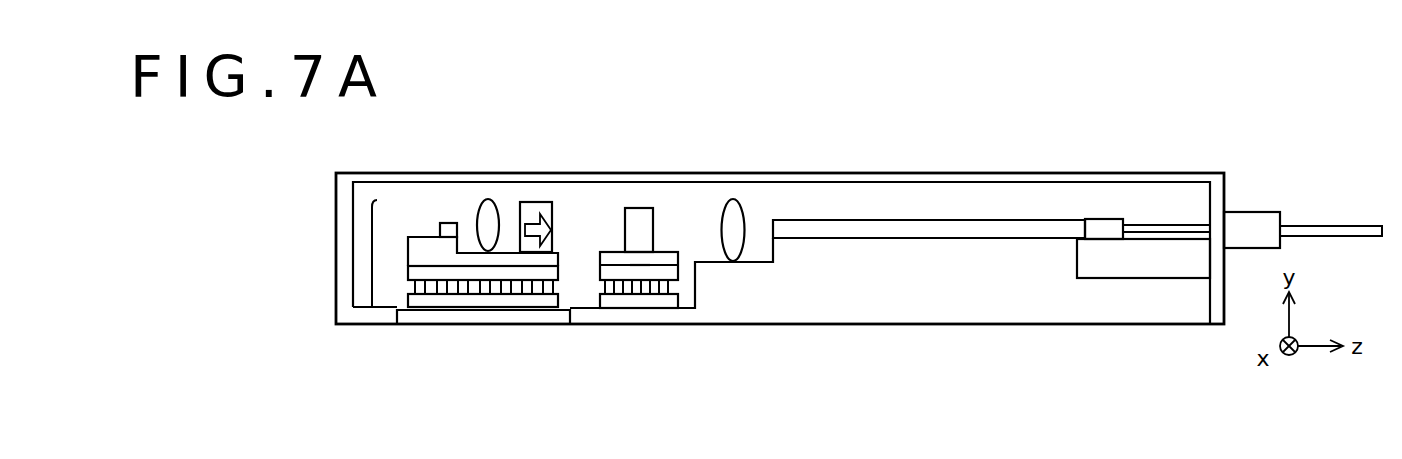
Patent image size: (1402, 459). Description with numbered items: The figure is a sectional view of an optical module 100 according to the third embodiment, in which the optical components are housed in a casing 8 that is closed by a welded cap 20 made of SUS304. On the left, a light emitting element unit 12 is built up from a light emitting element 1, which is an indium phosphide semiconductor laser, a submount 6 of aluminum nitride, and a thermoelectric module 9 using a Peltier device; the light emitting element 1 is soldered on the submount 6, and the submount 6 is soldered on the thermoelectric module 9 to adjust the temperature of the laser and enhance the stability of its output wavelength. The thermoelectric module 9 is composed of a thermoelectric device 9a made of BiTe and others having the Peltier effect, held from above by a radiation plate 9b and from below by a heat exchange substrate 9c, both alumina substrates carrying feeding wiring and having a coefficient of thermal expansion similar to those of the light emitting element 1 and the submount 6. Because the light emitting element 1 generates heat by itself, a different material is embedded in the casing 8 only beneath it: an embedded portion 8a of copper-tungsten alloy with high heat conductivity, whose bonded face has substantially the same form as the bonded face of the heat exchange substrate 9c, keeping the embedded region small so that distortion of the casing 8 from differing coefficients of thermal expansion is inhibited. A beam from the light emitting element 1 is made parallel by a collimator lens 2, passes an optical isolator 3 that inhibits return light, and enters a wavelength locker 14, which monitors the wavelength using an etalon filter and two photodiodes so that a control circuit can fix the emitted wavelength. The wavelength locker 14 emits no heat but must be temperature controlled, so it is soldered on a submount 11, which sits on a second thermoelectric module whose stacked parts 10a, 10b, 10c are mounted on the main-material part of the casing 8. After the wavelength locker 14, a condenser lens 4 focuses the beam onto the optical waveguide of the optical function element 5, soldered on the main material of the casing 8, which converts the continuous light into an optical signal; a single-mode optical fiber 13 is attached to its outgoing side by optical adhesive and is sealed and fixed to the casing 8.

The optical module 100 is at (1287, 137).
The cap 20 is at (1108, 178).
The light emitting element unit 12 is at (372, 252).
The casing 8 is at (952, 307).
The embedded portion 8a is at (548, 315).
The optical function element 5 is at (847, 228).
The single-mode optical fiber 13 is at (1172, 228).
The thermoelectric module 9 is at (454, 250).
The thermoelectric device 9a is at (427, 300).
The radiation plate 9b is at (548, 273).
The heat exchange substrate 9c is at (471, 300).
The submount 6 is at (516, 258).
The light emitting element 1 is at (455, 222).
The collimator lens 2 is at (489, 205).
The optical isolator 3 is at (534, 212).
The second submount lower block 10a is at (612, 300).
The second submount upper plate 10b is at (680, 270).
The bumps 10c is at (666, 297).
The submount 11 is at (639, 260).
The wavelength locker 14 is at (638, 222).
The condenser lens 4 is at (738, 262).